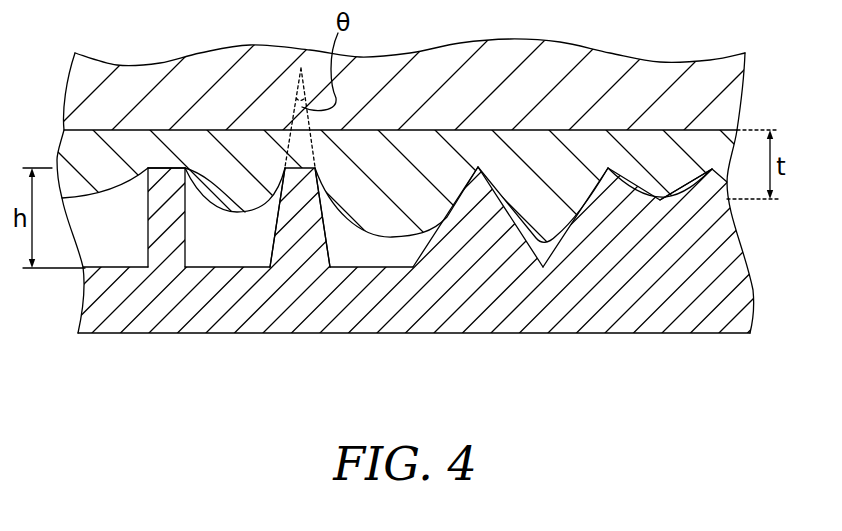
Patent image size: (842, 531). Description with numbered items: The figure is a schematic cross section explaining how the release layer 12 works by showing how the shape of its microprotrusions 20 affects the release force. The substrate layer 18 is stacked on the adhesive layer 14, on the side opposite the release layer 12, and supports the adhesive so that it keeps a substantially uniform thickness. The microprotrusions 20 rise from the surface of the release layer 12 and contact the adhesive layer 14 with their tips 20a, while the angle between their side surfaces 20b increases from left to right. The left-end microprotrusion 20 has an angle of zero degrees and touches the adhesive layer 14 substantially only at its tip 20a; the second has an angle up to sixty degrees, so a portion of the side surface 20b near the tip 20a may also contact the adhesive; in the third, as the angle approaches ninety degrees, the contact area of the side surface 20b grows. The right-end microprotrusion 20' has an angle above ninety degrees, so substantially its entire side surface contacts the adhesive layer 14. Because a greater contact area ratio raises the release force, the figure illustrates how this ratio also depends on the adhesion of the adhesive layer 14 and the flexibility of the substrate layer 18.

The release layer 12 is at (167, 337).
The adhesive layer 14 is at (135, 150).
The substrate layer 18 is at (592, 76).
The microprotrusions 20 is at (315, 280).
The microprotrusion 20' is at (693, 279).
The tip 20a is at (158, 168).
The side surfaces 20b is at (283, 200).